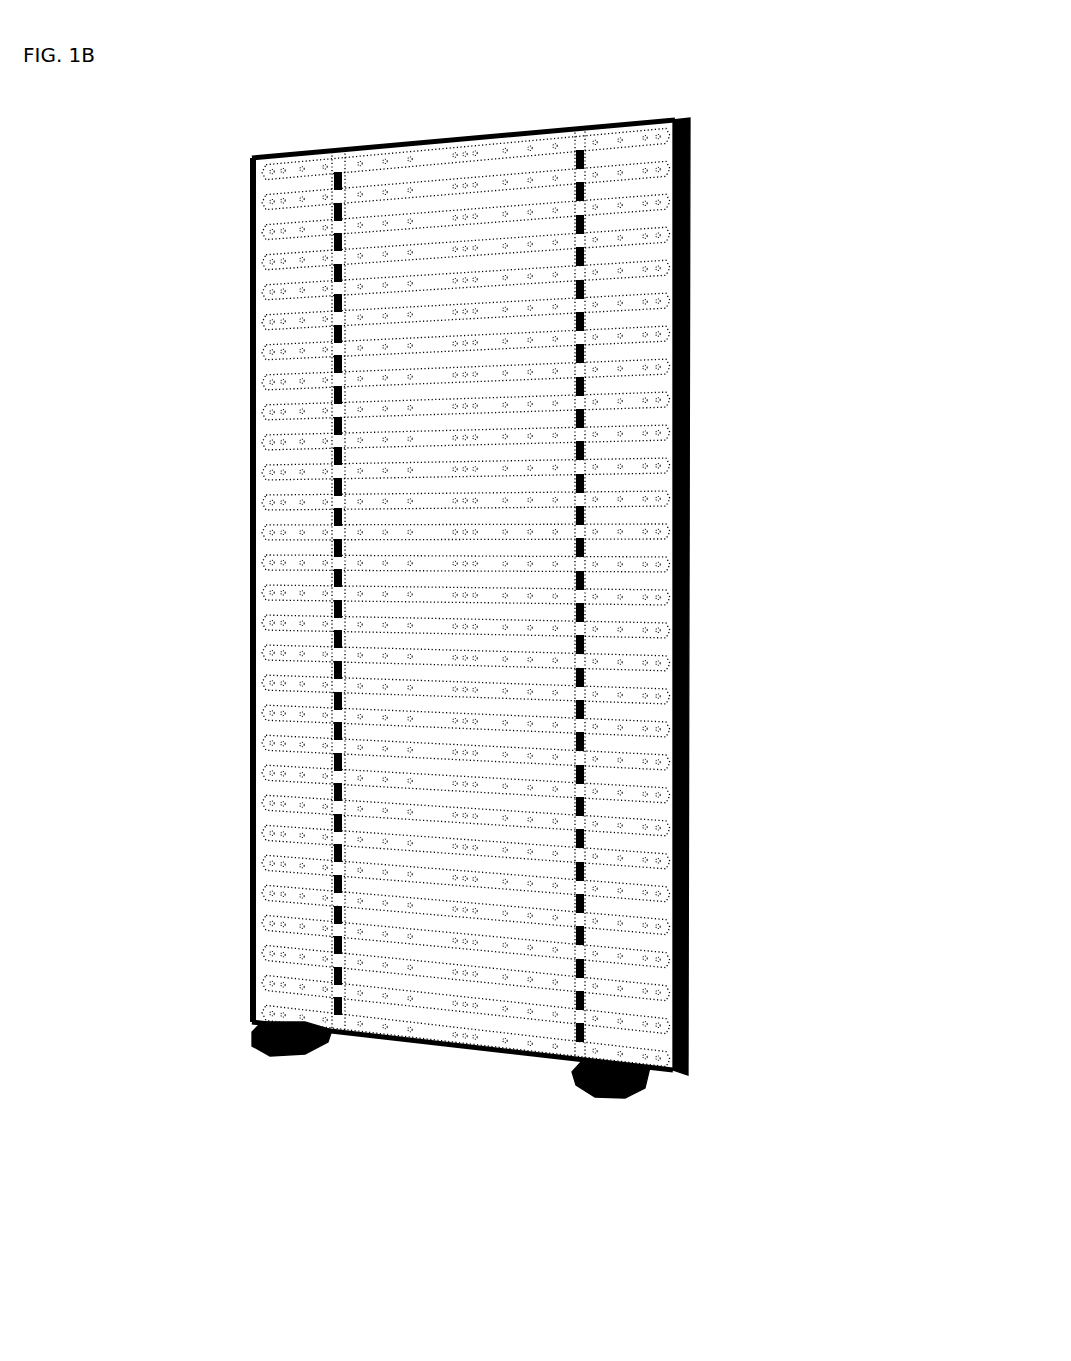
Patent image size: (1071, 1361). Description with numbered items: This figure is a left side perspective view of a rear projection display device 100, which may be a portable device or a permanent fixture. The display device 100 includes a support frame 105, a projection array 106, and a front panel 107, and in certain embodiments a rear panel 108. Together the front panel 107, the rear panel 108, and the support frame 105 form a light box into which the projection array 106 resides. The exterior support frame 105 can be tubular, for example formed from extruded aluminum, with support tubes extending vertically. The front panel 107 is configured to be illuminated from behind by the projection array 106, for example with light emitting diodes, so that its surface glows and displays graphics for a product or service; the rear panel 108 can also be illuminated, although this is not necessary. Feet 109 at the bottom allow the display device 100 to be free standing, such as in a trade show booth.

The display device 100 is at (388, 105).
The support frame 105 is at (688, 128).
The projection array 106 is at (551, 147).
The front panel 107 is at (265, 898).
The rear panel 108 is at (688, 610).
The feet 109 is at (451, 1114).